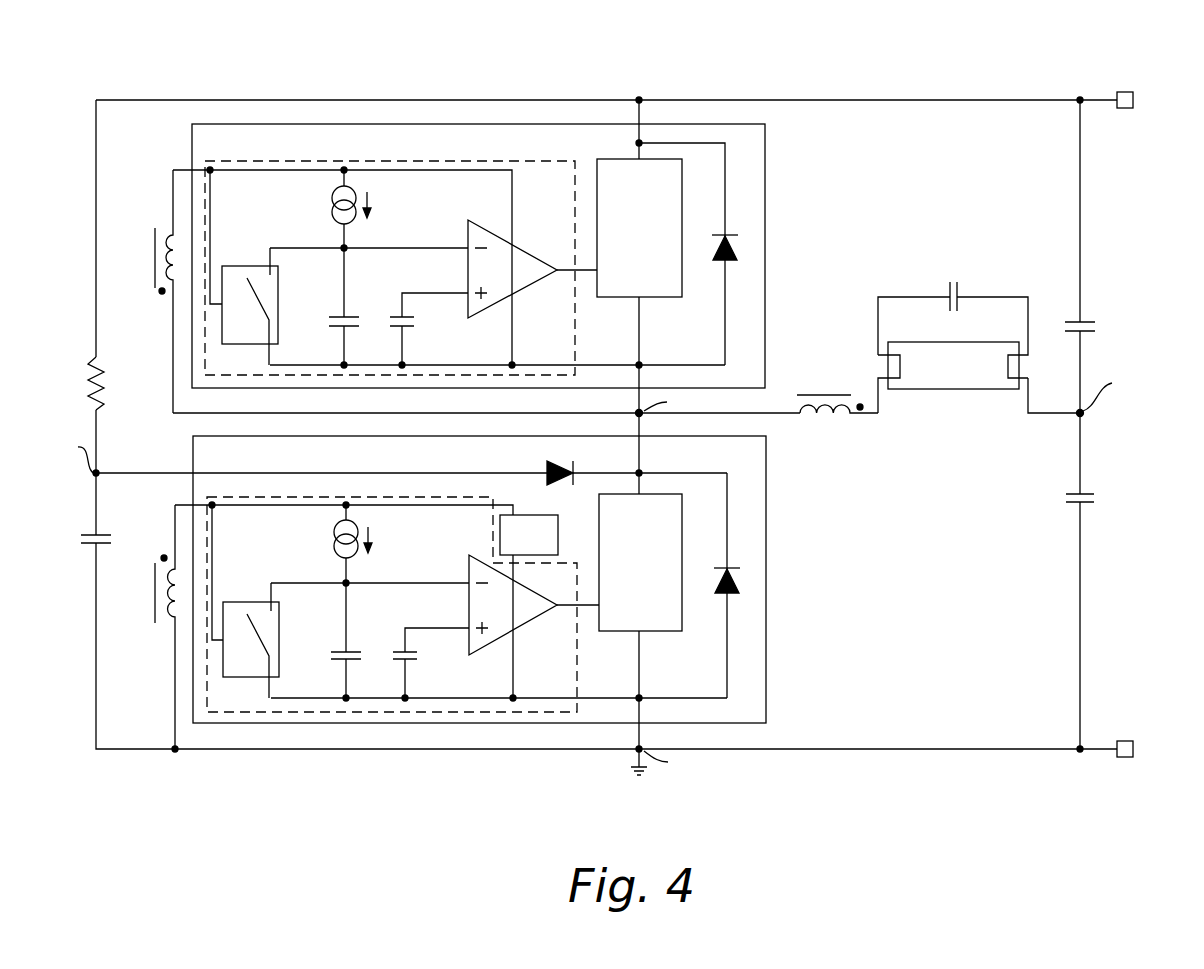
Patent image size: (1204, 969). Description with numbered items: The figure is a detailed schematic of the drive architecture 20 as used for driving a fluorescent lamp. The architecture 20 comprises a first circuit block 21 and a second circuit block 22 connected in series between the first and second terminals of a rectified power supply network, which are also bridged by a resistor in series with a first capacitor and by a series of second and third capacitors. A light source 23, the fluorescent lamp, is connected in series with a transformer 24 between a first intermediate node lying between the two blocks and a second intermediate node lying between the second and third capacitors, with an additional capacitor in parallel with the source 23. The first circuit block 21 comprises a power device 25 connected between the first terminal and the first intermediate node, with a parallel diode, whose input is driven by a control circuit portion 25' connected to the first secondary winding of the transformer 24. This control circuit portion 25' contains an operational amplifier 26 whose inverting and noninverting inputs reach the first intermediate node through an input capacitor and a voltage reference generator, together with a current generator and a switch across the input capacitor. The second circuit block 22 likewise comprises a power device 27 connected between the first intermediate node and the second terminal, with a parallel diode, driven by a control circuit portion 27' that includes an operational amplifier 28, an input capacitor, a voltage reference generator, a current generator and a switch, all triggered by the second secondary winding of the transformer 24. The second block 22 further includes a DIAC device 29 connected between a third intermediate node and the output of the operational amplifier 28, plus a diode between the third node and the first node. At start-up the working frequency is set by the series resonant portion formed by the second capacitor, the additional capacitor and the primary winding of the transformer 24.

The drive architecture 20 is at (855, 80).
The first circuit block 21 is at (765, 173).
The second circuit block 22 is at (766, 534).
The light source 23 is at (955, 389).
The transformer 24 is at (826, 390).
The power device 25 is at (624, 213).
The control circuit portion 25' is at (401, 218).
The operational amplifier 26 is at (522, 284).
The power device 27 is at (656, 583).
The control circuit portion 27' is at (403, 576).
The operational amplifier 28 is at (524, 619).
The DIAC device 29 is at (558, 535).